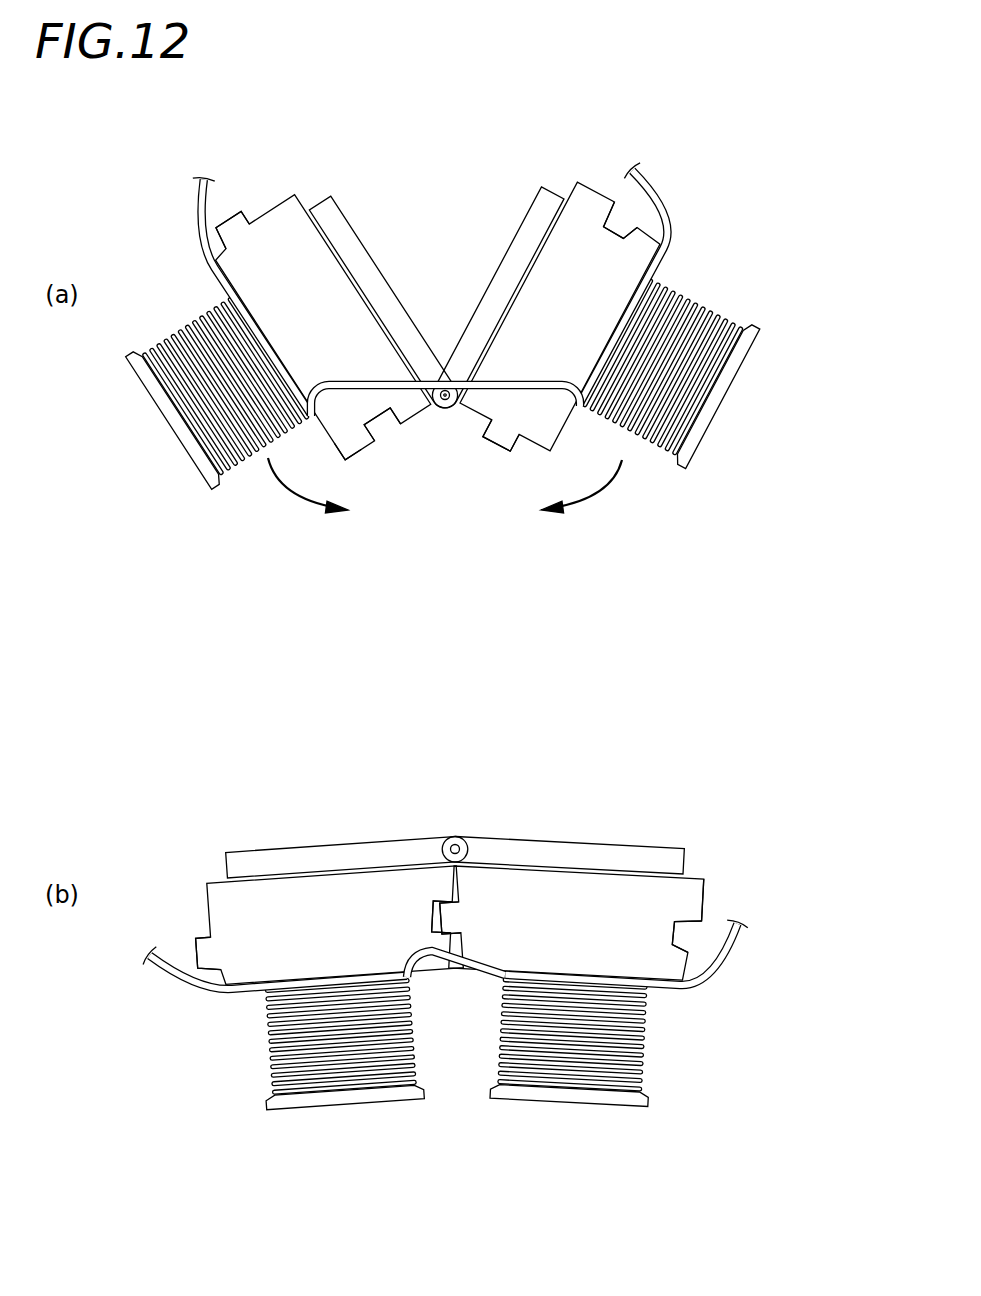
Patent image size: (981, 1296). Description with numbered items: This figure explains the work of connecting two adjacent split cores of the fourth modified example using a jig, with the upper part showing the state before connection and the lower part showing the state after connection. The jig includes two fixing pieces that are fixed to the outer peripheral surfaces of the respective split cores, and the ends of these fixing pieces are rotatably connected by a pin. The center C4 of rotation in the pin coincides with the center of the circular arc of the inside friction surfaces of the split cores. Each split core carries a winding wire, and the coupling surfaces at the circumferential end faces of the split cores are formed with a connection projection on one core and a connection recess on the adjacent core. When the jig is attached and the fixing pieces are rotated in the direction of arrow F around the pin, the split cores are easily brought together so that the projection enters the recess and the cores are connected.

The center of rotation C4 is at (445, 390).
The direction of arrow F is at (445, 493).